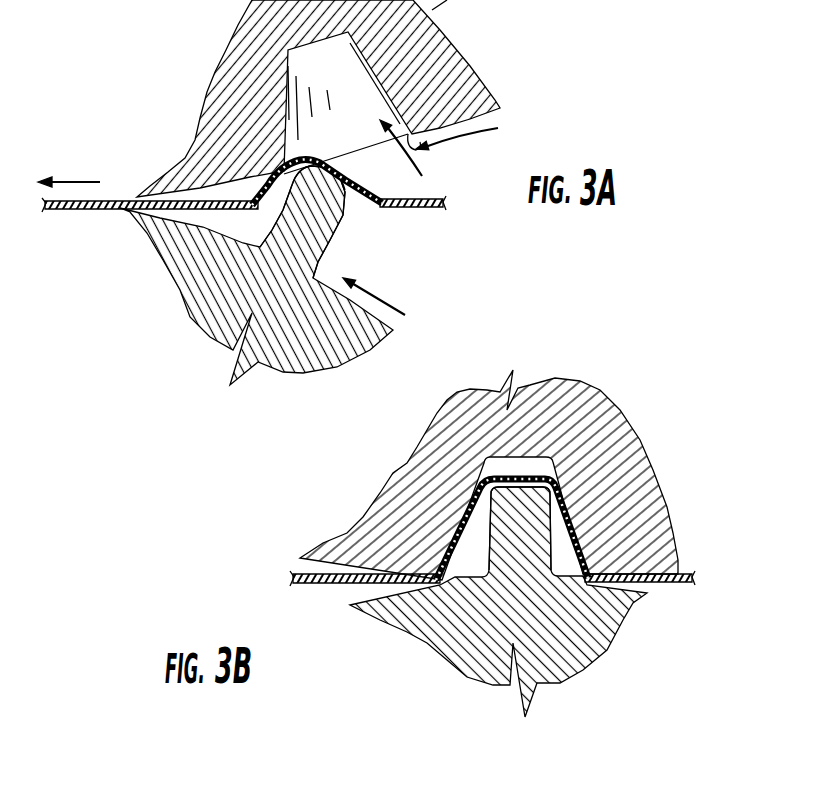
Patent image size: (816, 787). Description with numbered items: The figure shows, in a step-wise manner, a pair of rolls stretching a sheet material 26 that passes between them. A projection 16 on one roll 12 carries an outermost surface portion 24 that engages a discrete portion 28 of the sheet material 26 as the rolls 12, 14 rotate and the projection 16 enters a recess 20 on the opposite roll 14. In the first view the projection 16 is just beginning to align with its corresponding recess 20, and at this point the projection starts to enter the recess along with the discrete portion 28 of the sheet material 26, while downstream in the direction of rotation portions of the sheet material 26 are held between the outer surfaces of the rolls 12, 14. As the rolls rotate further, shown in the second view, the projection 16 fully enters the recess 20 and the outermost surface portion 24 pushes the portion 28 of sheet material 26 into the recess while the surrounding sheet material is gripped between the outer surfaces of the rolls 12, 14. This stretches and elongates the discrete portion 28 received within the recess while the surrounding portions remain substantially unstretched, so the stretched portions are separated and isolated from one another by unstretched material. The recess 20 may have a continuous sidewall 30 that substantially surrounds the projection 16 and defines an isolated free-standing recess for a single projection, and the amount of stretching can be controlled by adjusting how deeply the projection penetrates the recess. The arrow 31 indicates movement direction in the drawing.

In FIG. 3A, the roll 12 is at (316, 370).
In FIG. 3B, the roll 12 is at (612, 655).
In FIG. 3A, the opposite roll 14 is at (318, 98).
In FIG. 3B, the opposite roll 14 is at (650, 496).
In FIG. 3A, the projection 16 is at (310, 240).
In FIG. 3B, the projection 16 is at (528, 561).
In FIG. 3A, the recess 20 is at (413, 155).
In FIG. 3B, the recess 20 is at (521, 465).
In FIG. 3A, the outermost surface portion 24 is at (346, 200).
In FIG. 3A, the sheet material 26 is at (415, 203).
In FIG. 3B, the sheet material 26 is at (322, 586).
In FIG. 3A, the discrete portion 28 is at (356, 172).
In FIG. 3B, the discrete portion 28 is at (566, 500).
In FIG. 3A, the continuous sidewall 30 is at (340, 74).
In FIG. 3A, the feed direction arrow 31 is at (484, 127).